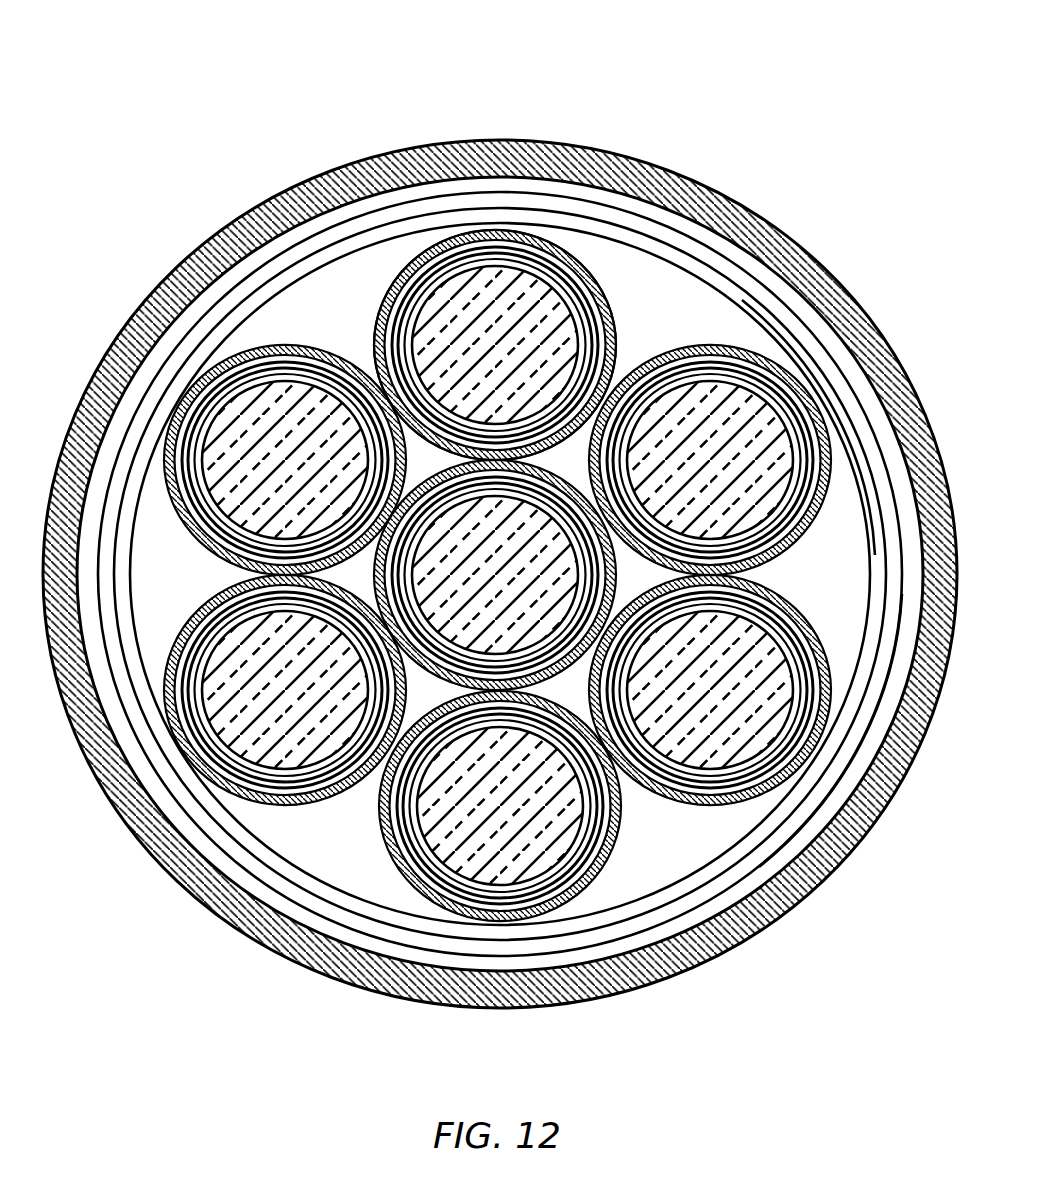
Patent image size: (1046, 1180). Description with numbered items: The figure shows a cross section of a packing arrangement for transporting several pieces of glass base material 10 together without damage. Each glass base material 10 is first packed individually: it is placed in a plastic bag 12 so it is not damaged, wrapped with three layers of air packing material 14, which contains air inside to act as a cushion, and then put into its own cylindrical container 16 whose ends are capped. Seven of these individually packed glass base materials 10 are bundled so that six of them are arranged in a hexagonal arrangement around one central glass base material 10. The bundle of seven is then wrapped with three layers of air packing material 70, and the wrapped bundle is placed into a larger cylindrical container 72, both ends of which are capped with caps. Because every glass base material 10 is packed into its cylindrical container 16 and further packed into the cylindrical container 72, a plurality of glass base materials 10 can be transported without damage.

The glass base material 10 is at (429, 250).
The plastic bag 12 is at (550, 239).
The air packing material 14 is at (572, 263).
The cylindrical container 16 is at (505, 234).
The air packing material 70 is at (500, 553).
The cylindrical container 72 is at (500, 574).